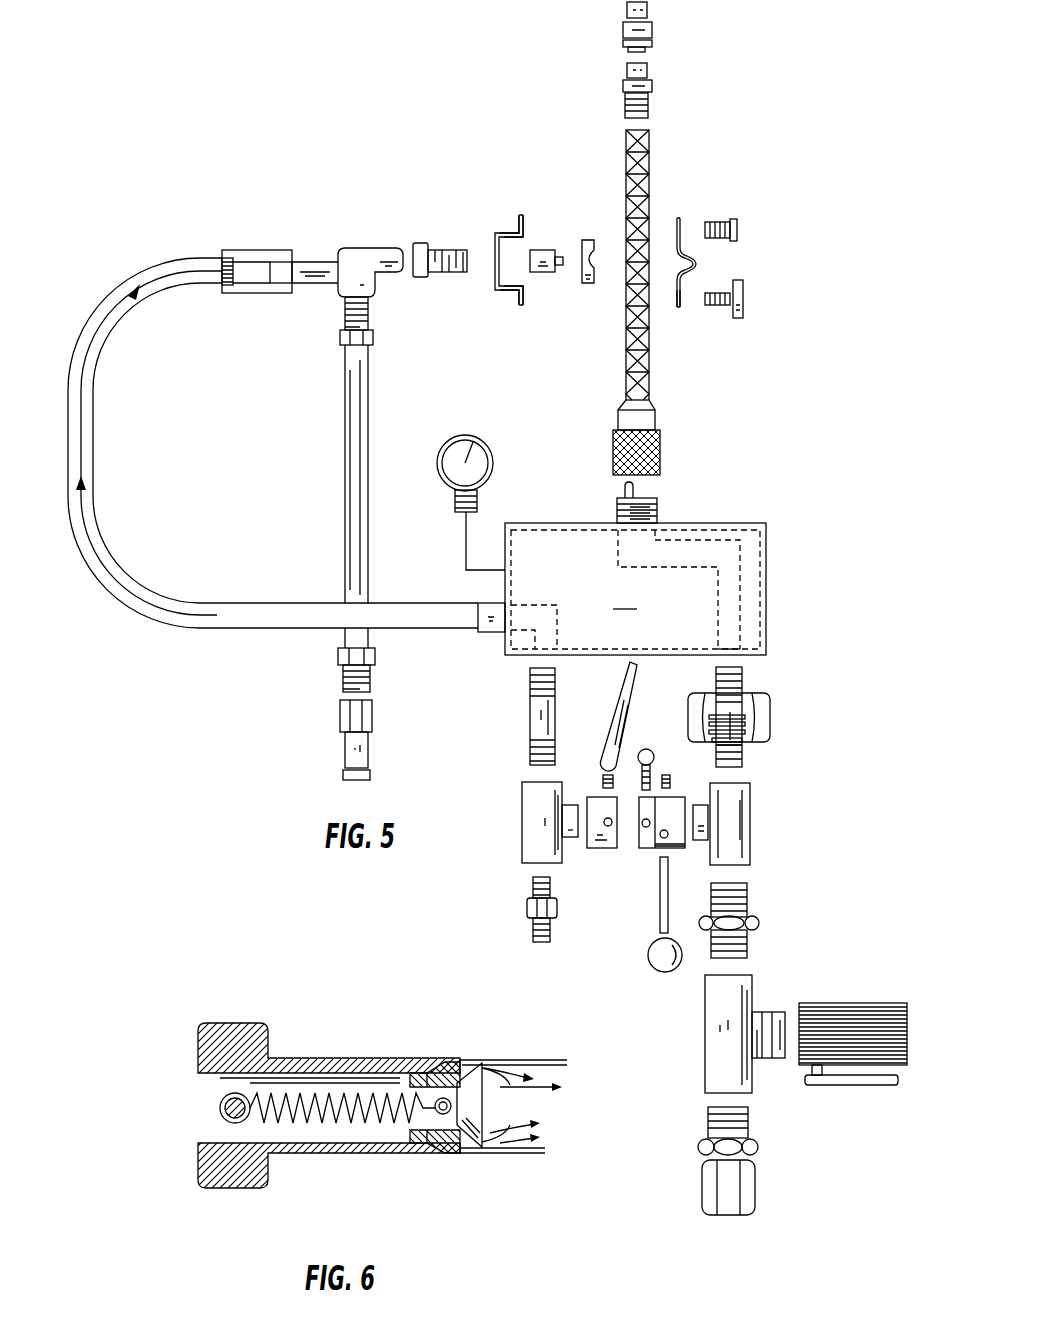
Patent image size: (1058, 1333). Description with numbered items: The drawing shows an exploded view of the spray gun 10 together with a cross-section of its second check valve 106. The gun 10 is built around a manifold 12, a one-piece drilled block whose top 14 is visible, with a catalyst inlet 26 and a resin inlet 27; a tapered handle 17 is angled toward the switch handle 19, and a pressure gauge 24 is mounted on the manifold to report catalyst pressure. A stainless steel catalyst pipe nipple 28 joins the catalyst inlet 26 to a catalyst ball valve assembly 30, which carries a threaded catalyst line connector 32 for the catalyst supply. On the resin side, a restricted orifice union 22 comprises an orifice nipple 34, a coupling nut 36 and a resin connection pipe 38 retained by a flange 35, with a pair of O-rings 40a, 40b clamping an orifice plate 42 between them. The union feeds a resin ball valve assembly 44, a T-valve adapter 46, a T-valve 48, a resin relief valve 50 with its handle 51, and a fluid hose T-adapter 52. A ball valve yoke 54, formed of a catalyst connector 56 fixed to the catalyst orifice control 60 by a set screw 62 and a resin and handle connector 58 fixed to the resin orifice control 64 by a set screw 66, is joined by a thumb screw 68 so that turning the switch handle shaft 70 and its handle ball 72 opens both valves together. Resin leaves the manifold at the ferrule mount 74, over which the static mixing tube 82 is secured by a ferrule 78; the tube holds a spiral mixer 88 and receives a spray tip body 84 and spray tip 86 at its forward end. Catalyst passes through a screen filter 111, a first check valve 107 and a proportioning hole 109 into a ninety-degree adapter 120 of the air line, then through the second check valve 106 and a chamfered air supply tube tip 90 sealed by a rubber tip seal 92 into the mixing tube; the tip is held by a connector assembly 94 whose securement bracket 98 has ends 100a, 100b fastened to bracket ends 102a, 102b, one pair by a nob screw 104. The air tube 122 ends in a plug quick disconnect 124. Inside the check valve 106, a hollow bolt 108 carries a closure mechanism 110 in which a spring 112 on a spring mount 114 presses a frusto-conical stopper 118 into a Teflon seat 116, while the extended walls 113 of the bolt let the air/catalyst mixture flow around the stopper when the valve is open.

In FIG. 5, the spray gun 10 is at (786, 490).
In FIG. 5, the manifold 12 is at (768, 572).
In FIG. 5, the top 14 is at (676, 589).
In FIG. 5, the tapered handle 17 is at (608, 712).
In FIG. 5, the switch handle 19 is at (655, 937).
In FIG. 5, the restricted orifice union 22 is at (808, 680).
In FIG. 5, the pressure gauge 24 is at (466, 450).
In FIG. 5, the catalyst inlet 26 is at (532, 655).
In FIG. 5, the resin inlet 27 is at (740, 655).
In FIG. 5, the catalyst pipe nipple 28 is at (530, 715).
In FIG. 5, the catalyst ball valve assembly 30 is at (528, 822).
In FIG. 5, the threaded catalyst line connector 32 is at (533, 900).
In FIG. 5, the orifice nipple 34 is at (716, 680).
In FIG. 5, the flange 35 is at (745, 742).
In FIG. 5, the coupling nut 36 is at (770, 735).
In FIG. 5, the resin connection pipe 38 is at (745, 762).
In FIG. 5, the O-ring 40a is at (712, 718).
In FIG. 5, the O-ring 40b is at (712, 731).
In FIG. 5, the orifice plate 42 is at (745, 717).
In FIG. 5, the resin ball valve assembly 44 is at (750, 820).
In FIG. 5, the T-valve adapter 46 is at (747, 904).
In FIG. 5, the T-valve 48 is at (705, 1030).
In FIG. 5, the fluid relief valve 50 is at (843, 1003).
In FIG. 5, the handle 51 is at (840, 1085).
In FIG. 5, the fluid hose T-adapter 52 is at (705, 1178).
In FIG. 5, the ball valve yoke 54 is at (603, 893).
In FIG. 5, the catalyst connector 56 is at (613, 850).
In FIG. 5, the resin and handle connector 58 is at (680, 850).
In FIG. 5, the catalyst ball valve assembly orifice control 60 is at (570, 838).
In FIG. 5, the set screw 62 is at (603, 782).
In FIG. 5, the resin ball valve orifice control 64 is at (698, 807).
In FIG. 5, the set screw 66 is at (670, 778).
In FIG. 5, the thumb screw 68 is at (651, 775).
In FIG. 5, the switch handle shaft 70 is at (660, 880).
In FIG. 5, the handle ball 72 is at (719, 1028).
In FIG. 5, the ferrule mount 74 is at (657, 505).
In FIG. 5, the ferrule 78 is at (660, 452).
In FIG. 5, the static mixing tube 82 is at (649, 140).
In FIG. 5, the spray tip body 84 is at (652, 86).
In FIG. 5, the spray tip 86 is at (652, 30).
In FIG. 5, the spiral mixer 88 is at (626, 168).
In FIG. 5, the air supply tube tip 90 is at (541, 252).
In FIG. 5, the rubber tip seal 92 is at (588, 283).
In FIG. 5, the connector assembly 94 is at (495, 285).
In FIG. 5, the securement bracket 98 is at (694, 264).
In FIG. 5, the end of securement bracket 100a is at (678, 220).
In FIG. 5, the end of securement bracket 100b is at (679, 307).
In FIG. 5, the end of tube tip bracket 102a is at (514, 235).
In FIG. 5, the end of tube tip bracket 102b is at (521, 302).
In FIG. 5, the nob screw 104 is at (740, 318).
In FIG. 5, the second check valve 106 is at (439, 246).
In FIG. 6, the second check valve 106 is at (365, 1058).
In FIG. 5, the first check valve 107 is at (252, 272).
In FIG. 6, the bolt 108 is at (308, 1153).
In FIG. 5, the proportioning hole 109 is at (277, 262).
In FIG. 6, the closure mechanism 110 is at (505, 1062).
In FIG. 5, the screen filter 111 is at (222, 262).
In FIG. 6, the spring 112 is at (345, 1122).
In FIG. 6, the walls 113 is at (515, 1155).
In FIG. 6, the spring mount 114 is at (221, 1106).
In FIG. 6, the seat 116 is at (447, 1155).
In FIG. 6, the stopper 118 is at (484, 1112).
In FIG. 5, the ninety-degree adapter 120 is at (340, 248).
In FIG. 5, the air tube 122 is at (345, 495).
In FIG. 5, the plug quick disconnect 124 is at (345, 745).